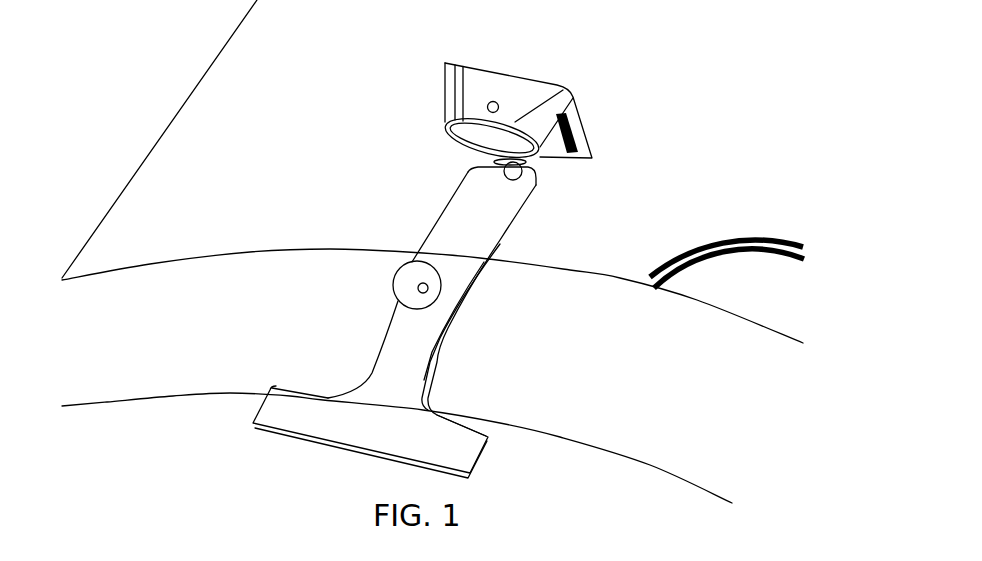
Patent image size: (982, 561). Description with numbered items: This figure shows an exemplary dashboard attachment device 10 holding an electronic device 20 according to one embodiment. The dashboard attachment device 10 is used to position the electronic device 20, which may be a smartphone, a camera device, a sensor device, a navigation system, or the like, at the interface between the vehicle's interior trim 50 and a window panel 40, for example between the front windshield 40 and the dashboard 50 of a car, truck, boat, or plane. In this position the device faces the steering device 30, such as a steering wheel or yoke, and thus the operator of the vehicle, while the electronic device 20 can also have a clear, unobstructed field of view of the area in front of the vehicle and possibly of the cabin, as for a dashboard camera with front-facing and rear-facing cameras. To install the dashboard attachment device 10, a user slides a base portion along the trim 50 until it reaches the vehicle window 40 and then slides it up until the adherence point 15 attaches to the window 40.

The dashboard attachment device 10 is at (363, 313).
The adherence point 15 is at (408, 278).
The electronic device 20 is at (596, 121).
The steering device 30 is at (700, 228).
The window panel 40 is at (160, 89).
The interior trim 50 is at (667, 386).